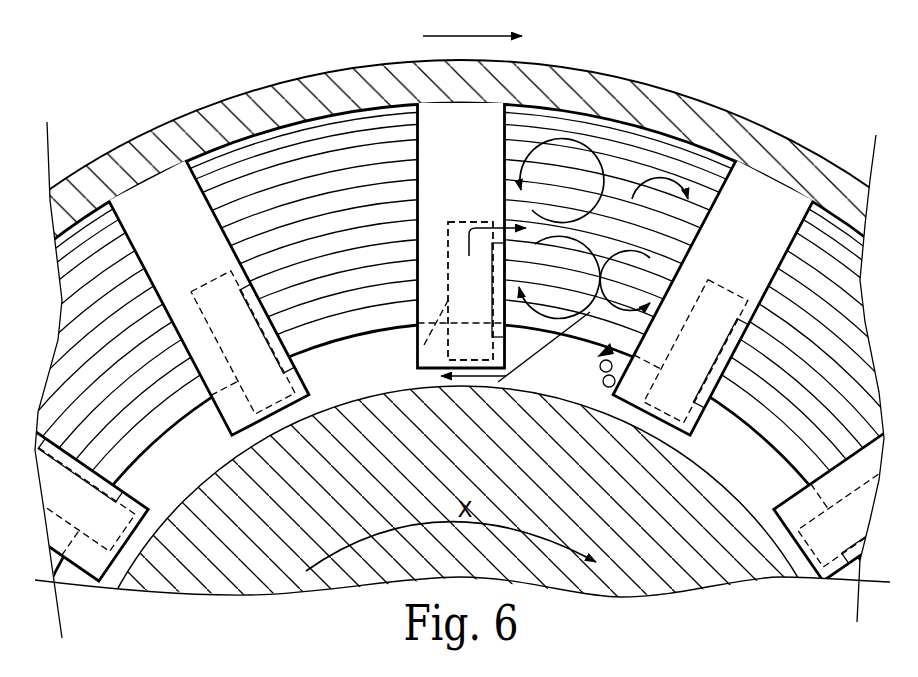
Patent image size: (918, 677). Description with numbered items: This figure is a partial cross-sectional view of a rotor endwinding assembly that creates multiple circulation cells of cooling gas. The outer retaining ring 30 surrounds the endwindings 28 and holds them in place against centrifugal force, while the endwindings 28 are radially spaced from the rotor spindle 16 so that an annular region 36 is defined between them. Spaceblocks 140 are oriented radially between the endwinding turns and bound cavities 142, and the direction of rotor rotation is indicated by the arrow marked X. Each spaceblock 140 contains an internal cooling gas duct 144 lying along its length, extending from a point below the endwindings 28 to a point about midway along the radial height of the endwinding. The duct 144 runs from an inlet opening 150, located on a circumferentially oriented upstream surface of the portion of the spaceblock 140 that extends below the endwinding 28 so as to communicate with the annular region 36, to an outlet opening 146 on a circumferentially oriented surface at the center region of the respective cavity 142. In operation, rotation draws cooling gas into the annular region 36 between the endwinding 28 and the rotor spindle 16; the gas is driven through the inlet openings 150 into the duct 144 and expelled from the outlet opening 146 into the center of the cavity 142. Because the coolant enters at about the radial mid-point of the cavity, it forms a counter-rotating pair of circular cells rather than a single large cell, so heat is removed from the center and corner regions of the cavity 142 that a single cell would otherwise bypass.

The rotor spindle 16 is at (660, 589).
The endwindings 28 is at (336, 360).
The retaining ring 30 is at (172, 130).
The annular region 36 is at (722, 462).
The spaceblock 140 is at (137, 205).
The cavity 142 is at (275, 168).
The cooling gas duct 144 is at (420, 348).
The outlet opening 146 is at (499, 221).
The inlet opening 150 is at (481, 345).